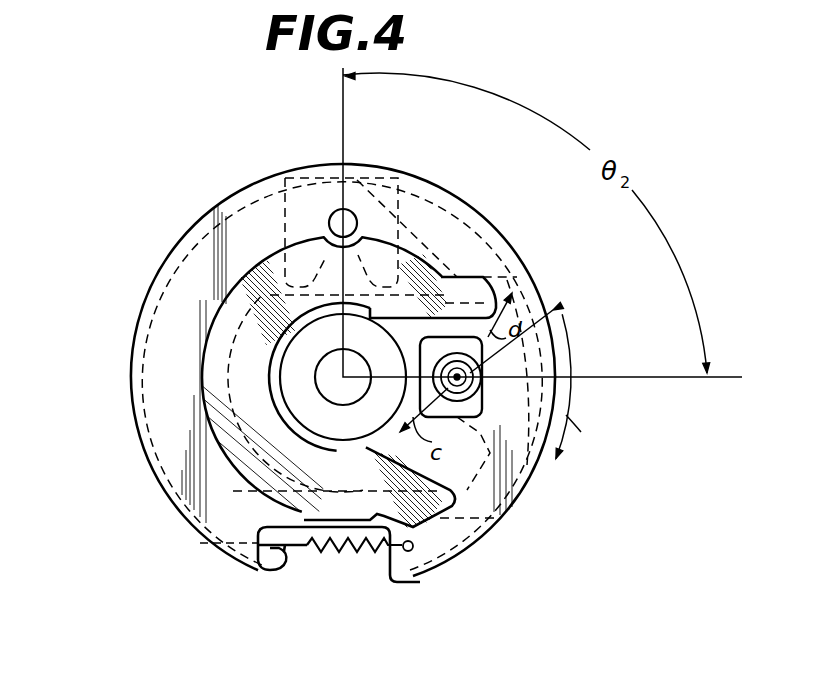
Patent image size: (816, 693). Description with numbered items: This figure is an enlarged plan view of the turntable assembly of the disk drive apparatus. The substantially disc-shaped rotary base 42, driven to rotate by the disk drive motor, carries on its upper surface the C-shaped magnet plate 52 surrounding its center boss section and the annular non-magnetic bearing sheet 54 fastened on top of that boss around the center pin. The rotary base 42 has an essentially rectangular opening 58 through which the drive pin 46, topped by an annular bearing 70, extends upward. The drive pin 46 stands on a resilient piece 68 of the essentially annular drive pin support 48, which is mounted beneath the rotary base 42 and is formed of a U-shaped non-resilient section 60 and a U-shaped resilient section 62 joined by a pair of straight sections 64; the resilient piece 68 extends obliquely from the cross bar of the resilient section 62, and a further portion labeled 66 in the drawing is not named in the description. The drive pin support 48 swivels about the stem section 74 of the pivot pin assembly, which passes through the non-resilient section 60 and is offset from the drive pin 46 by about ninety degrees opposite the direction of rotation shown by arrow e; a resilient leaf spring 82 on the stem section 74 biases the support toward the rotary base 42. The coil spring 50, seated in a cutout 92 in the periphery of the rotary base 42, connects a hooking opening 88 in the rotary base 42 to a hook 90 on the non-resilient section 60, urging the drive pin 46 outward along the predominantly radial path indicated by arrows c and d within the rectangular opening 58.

The rotary base 42 is at (466, 222).
The drive pin 46 is at (450, 385).
The drive pin support 48 is at (168, 480).
The spring 50 is at (315, 550).
The magnet plate 52 is at (207, 383).
The bearing sheet 54 is at (338, 427).
The rectangular opening 58 is at (483, 394).
The non-resilient section 60 is at (208, 267).
The resilient section 62 is at (553, 310).
The straight sections 64 is at (492, 282).
The stop 66 is at (525, 438).
The resilient piece 68 is at (483, 383).
The annular bearing 70 is at (481, 369).
The stem section 74 is at (333, 210).
The resilient leaf spring 82 is at (412, 185).
The hooking opening 88 is at (412, 553).
The hook 90 is at (276, 565).
The cutout 92 is at (262, 572).